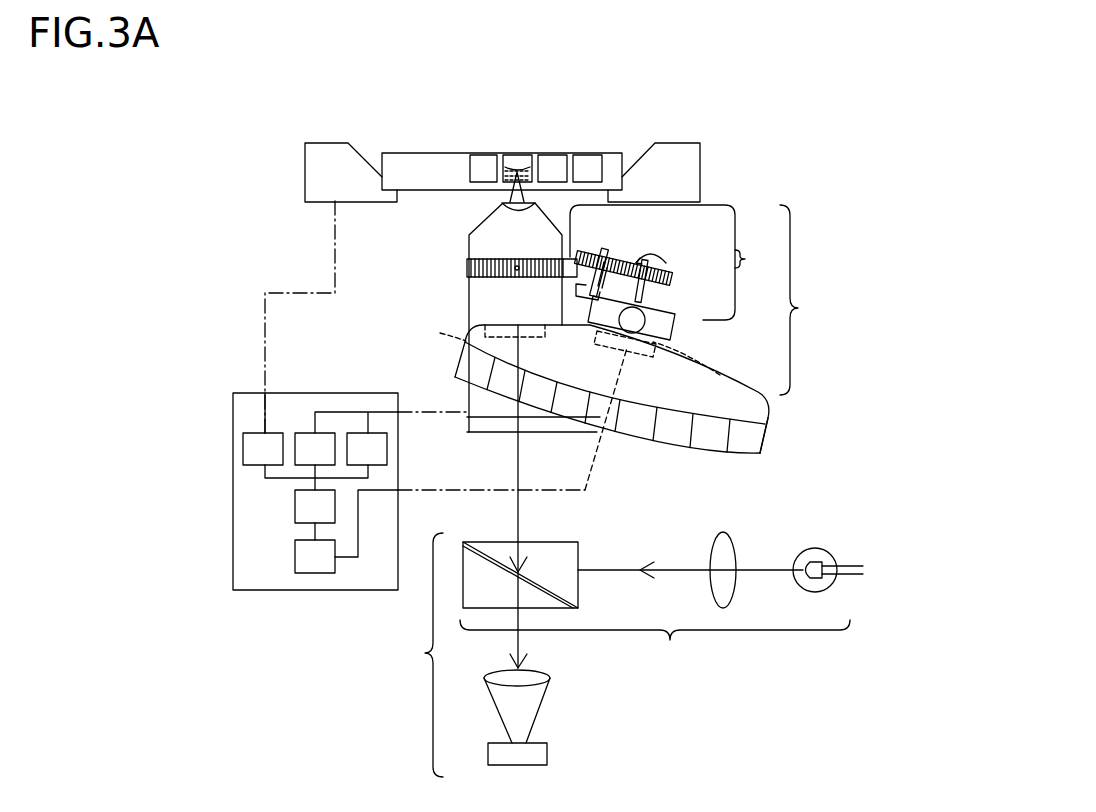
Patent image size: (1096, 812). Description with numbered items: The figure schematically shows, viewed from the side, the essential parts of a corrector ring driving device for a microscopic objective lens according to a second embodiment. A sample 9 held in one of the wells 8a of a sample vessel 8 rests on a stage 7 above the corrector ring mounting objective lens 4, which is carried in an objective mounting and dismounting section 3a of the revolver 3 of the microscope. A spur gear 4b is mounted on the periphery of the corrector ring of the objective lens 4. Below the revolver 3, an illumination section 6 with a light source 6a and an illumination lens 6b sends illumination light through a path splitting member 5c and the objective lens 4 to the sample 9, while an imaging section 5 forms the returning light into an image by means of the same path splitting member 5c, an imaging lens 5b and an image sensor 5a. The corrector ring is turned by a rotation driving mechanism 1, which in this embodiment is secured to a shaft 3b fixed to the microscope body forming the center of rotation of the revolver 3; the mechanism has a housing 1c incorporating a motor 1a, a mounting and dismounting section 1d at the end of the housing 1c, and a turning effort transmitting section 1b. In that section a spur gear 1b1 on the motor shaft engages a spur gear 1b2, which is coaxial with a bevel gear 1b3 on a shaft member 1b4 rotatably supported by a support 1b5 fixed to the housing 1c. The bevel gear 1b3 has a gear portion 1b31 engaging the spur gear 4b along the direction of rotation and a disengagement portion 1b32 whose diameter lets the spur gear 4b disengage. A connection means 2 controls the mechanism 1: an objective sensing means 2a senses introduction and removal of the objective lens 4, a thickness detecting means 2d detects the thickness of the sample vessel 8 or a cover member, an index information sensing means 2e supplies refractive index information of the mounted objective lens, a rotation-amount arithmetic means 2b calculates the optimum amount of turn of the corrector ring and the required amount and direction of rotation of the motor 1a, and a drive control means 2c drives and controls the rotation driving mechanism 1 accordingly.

The rotation driving mechanism 1 is at (687, 347).
The motor 1a is at (673, 341).
The turning effort transmitting section 1b is at (673, 262).
The spur gear 1b1 is at (672, 278).
The spur gear 1b2 is at (607, 252).
The bevel gear 1b3 is at (646, 256).
The shaft member 1b4 is at (600, 283).
The support 1b5 is at (645, 297).
The gear portion 1b31 is at (576, 272).
The disengagement portion 1b32 is at (626, 350).
The housing 1c is at (675, 318).
The mounting and dismounting section 1d is at (720, 375).
The connection means 2 is at (315, 451).
The objective sensing means 2a is at (367, 450).
The rotation-amount arithmetic means 2b is at (315, 507).
The drive control means 2c is at (315, 557).
The thickness detecting means 2d is at (263, 450).
The index information sensing means 2e is at (315, 450).
The revolver 3 is at (467, 335).
The objective mounting and dismounting section 3a is at (463, 354).
The shaft 3b is at (739, 420).
The corrector ring mounting objective lens 4 is at (493, 245).
The spur gear 4b is at (468, 270).
The imaging section 5 is at (521, 653).
The image sensor 5a is at (543, 757).
The imaging lens 5b is at (550, 673).
The path splitting member 5c is at (552, 585).
The illumination section 6 is at (698, 583).
The light source 6a is at (833, 553).
The illumination lens 6b is at (727, 535).
The stage 7 is at (677, 153).
The sample vessel 8 is at (397, 162).
The wells 8a is at (478, 165).
The sample 9 is at (508, 168).